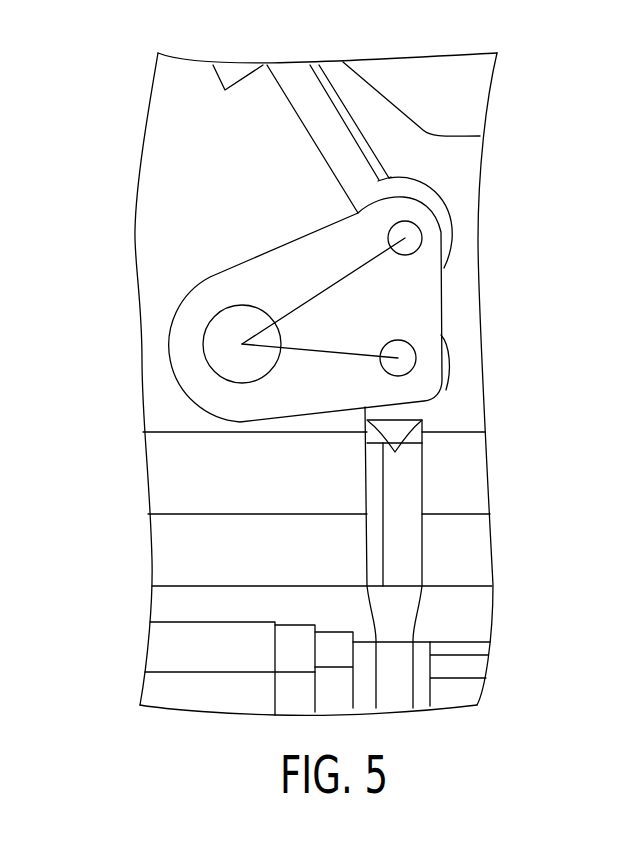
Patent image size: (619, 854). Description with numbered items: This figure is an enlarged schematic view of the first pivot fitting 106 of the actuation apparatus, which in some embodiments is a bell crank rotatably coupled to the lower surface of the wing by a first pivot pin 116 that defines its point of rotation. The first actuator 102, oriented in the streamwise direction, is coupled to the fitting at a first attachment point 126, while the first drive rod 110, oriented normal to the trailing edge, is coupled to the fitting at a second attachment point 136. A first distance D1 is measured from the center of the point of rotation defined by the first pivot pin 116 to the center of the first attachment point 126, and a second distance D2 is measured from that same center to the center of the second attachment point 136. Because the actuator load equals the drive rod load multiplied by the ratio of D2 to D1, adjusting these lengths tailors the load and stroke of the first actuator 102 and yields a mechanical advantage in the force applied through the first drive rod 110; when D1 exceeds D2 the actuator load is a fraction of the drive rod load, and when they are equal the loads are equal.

The first actuator 102 is at (338, 153).
The first pivot fitting 106 is at (405, 298).
The first drive rod 110 is at (405, 535).
The first pivot pin 116 is at (203, 335).
The first attachment point 126 is at (428, 242).
The second attachment point 136 is at (419, 352).
The first distance D1 is at (318, 293).
The second distance D2 is at (318, 353).